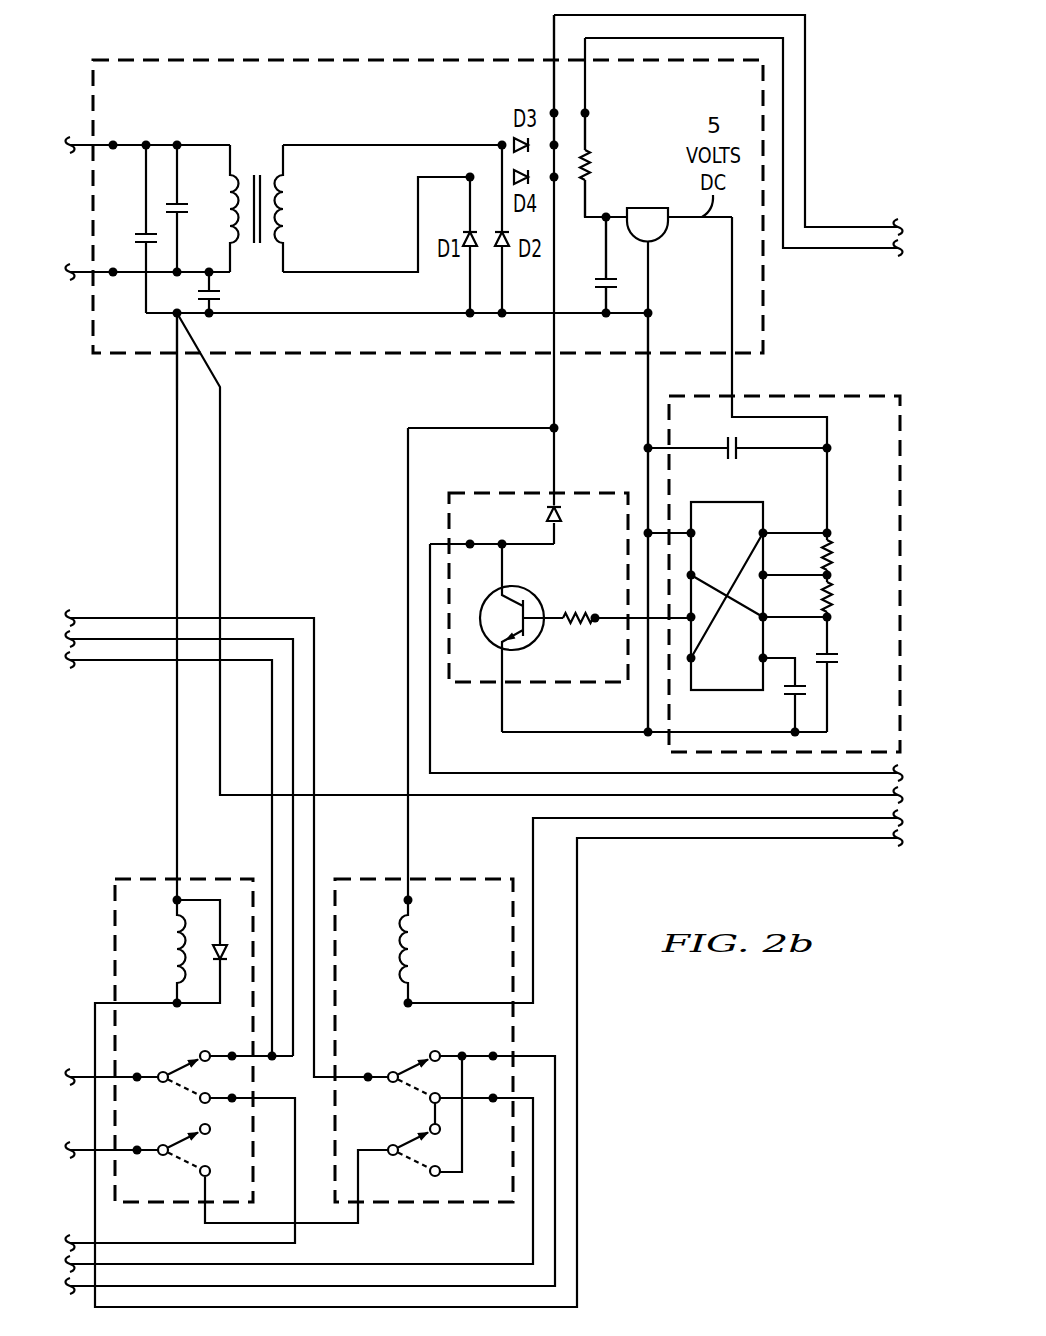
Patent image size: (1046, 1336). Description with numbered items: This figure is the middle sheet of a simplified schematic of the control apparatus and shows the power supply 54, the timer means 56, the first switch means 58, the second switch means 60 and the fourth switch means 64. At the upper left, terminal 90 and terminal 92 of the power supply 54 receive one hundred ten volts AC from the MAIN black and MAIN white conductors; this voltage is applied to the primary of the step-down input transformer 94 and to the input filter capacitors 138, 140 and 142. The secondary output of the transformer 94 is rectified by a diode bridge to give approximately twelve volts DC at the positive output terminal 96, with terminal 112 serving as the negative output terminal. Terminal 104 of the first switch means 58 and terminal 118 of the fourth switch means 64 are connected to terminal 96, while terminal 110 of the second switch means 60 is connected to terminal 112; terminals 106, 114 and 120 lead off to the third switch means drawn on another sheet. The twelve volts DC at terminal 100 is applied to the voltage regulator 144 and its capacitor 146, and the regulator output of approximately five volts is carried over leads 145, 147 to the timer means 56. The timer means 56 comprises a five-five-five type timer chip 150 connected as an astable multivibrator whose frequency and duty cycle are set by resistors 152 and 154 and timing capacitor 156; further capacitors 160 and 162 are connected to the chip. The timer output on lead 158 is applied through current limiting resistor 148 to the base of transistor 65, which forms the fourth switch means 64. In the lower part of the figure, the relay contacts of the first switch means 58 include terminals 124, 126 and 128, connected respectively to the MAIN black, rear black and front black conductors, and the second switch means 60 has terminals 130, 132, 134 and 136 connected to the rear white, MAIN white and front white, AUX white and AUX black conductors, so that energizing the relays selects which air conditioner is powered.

The power supply 54 is at (233, 58).
The timer means 56 is at (843, 394).
The first switch means 58 is at (452, 878).
The second switch means 60 is at (155, 878).
The fourth switch means 64 is at (486, 491).
The transistor 65 is at (535, 600).
The terminal 90 is at (113, 143).
The terminal 92 is at (113, 275).
The input transformer 94 is at (257, 170).
The terminal 96 is at (553, 112).
The terminal 100 is at (586, 113).
The terminal 104 is at (410, 903).
The terminal 106 is at (410, 1001).
The terminal 110 is at (175, 904).
The terminal 112 is at (176, 316).
The terminal 114 is at (176, 1000).
The terminal 118 is at (556, 430).
The terminal 120 is at (470, 543).
The terminal 124 is at (368, 1075).
The terminal 126 is at (493, 1054).
The terminal 128 is at (493, 1101).
The terminal 130 is at (138, 1075).
The terminal 132 is at (230, 1055).
The terminal 134 is at (232, 1101).
The terminal 136 is at (138, 1148).
The input filter capacitor 138 is at (146, 236).
The input filter capacitor 140 is at (180, 205).
The input filter capacitor 142 is at (214, 295).
The voltage regulator 144 is at (647, 208).
The lead 145 is at (733, 388).
The capacitor 146 is at (604, 282).
The lead 147 is at (648, 398).
The current limiting resistor 148 is at (590, 617).
The 555 timer chip 150 is at (733, 502).
The resistor 152 is at (832, 553).
The resistor 154 is at (832, 597).
The timing capacitor 156 is at (830, 653).
The lead 158 is at (622, 620).
The capacitor 160 is at (784, 693).
The capacitor 162 is at (727, 440).